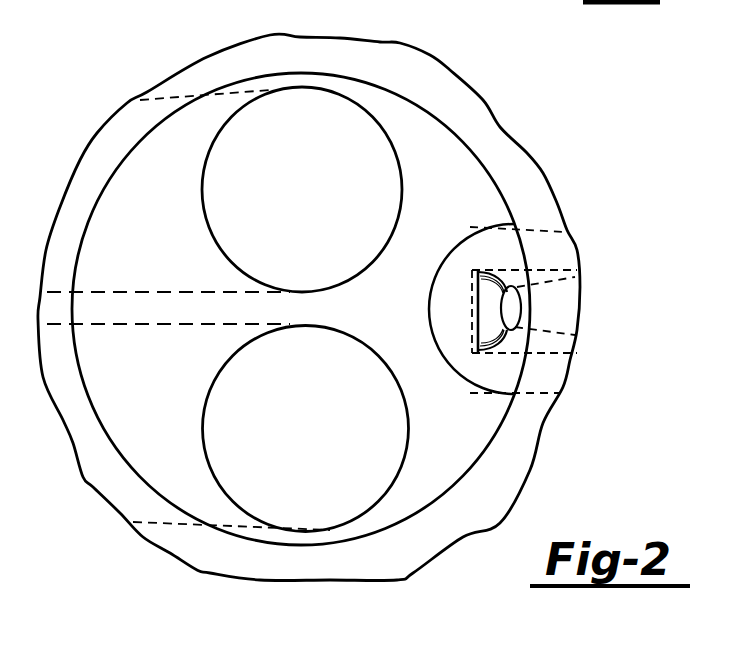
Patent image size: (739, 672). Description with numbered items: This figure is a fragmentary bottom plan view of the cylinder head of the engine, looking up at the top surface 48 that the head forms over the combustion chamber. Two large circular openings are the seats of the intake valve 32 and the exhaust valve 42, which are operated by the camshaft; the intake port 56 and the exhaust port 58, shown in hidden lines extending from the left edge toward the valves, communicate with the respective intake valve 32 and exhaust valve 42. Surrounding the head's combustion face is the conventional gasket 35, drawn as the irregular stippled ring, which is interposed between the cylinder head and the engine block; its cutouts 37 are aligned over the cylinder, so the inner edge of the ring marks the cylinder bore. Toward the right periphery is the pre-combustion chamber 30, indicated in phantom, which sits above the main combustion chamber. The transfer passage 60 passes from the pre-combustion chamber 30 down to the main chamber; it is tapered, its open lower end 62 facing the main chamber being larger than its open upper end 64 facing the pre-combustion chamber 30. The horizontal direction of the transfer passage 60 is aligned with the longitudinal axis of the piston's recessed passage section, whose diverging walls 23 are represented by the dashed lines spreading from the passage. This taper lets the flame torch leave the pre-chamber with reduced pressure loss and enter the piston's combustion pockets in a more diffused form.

The pre-combustion chamber 30 is at (548, 222).
The intake valve 32 is at (312, 204).
The exhaust valve 42 is at (320, 449).
The gasket 35 is at (347, 556).
The cutouts 37 is at (442, 126).
The top surface 48 is at (470, 217).
The intake port 56 is at (153, 291).
The exhaust port 58 is at (178, 327).
The transfer passage 60 is at (508, 290).
The lower end 62 is at (512, 322).
The upper end 64 is at (509, 325).
The diverging walls 23 is at (537, 307).